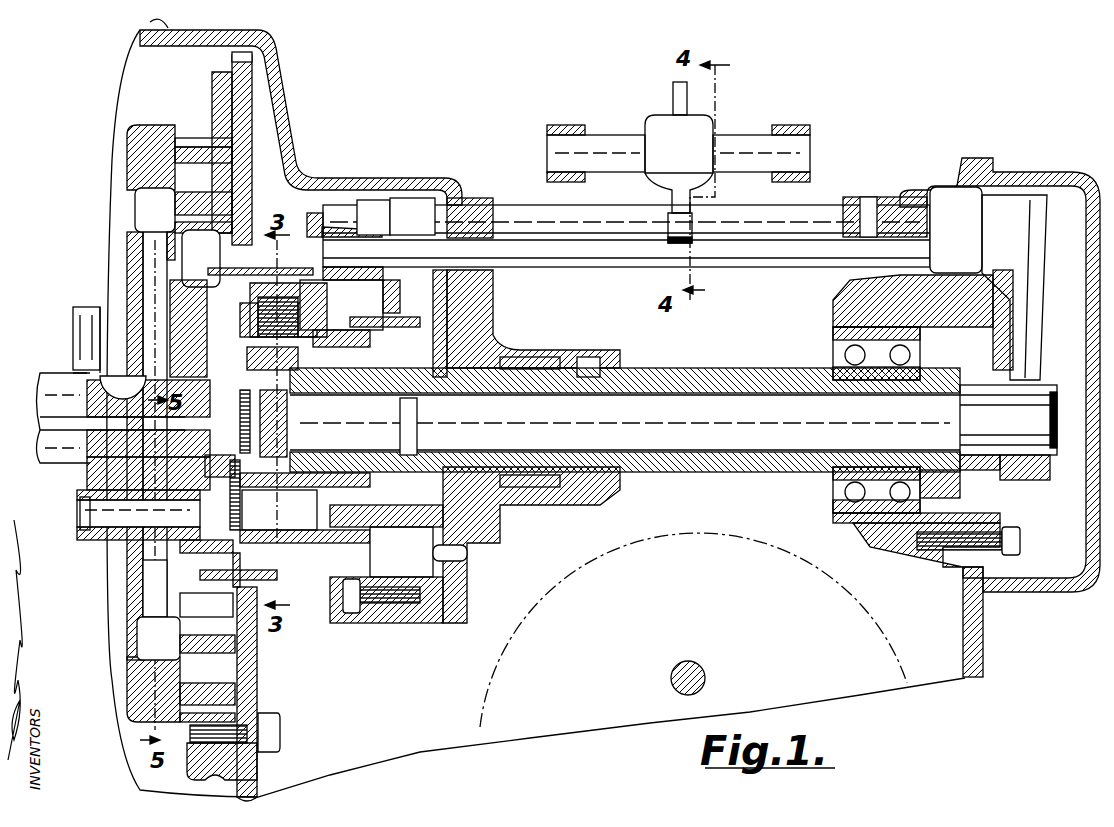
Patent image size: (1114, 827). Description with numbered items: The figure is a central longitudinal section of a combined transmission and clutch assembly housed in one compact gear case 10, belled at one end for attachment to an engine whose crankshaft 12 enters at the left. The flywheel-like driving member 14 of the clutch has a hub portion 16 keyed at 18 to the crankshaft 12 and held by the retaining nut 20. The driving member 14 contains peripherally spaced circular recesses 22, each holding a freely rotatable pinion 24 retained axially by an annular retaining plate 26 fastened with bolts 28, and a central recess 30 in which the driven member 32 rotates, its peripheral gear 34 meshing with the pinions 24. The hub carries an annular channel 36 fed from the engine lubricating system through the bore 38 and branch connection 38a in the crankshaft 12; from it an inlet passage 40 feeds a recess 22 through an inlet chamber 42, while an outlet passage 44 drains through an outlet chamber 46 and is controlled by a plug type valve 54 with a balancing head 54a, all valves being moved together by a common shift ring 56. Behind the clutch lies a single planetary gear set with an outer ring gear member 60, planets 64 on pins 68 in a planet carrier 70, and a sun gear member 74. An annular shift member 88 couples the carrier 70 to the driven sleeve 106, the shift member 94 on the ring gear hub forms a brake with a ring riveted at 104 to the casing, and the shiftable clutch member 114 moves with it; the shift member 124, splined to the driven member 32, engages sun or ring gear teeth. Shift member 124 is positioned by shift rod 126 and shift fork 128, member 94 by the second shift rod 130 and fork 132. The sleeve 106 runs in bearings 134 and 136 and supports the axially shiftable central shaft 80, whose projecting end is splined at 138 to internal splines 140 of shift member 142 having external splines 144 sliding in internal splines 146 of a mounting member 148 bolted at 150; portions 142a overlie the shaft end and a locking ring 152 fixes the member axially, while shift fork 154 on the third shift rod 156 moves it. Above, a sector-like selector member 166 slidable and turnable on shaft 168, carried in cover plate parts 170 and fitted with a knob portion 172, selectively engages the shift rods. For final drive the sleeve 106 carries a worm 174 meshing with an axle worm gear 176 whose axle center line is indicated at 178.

The gear case 10 is at (300, 148).
The crankshaft 12 is at (75, 372).
The driving member 14 is at (127, 150).
The hub portion 16 is at (75, 365).
The key 18 is at (110, 390).
The retaining nut 20 is at (200, 380).
The circular recesses 22 is at (172, 160).
The pinion 24 is at (230, 157).
The annular retaining plate 26 is at (250, 668).
The bolts 28 is at (268, 735).
The central recess 30 is at (182, 250).
The driven member 32 is at (232, 228).
The gear 34 is at (180, 217).
The annular channel 36 is at (195, 350).
The bore 38 is at (95, 432).
The branch connection 38a is at (150, 450).
The inlet passage 40 is at (150, 262).
The inlet chamber 42 is at (155, 192).
The outlet passage 44 is at (148, 597).
The outlet chamber 46 is at (145, 630).
The plug type valve 54 is at (100, 527).
The balancing head 54a is at (217, 471).
The shift ring 56 is at (92, 525).
The outer ring gear member 60 is at (330, 300).
The planets 64 is at (295, 590).
The pins 68 is at (250, 517).
The planet carrier 70 is at (253, 375).
The sun gear member 74 is at (225, 495).
The central shaft 80 is at (712, 423).
The annular shift member 88 is at (338, 462).
The shift member 94 is at (386, 564).
The rivets 104 is at (466, 553).
The sleeve 106 is at (520, 392).
The shiftable clutch member 114 is at (427, 460).
The shift member 124 is at (292, 590).
The shift rod 126 is at (583, 267).
The shift fork 128 is at (302, 213).
The second shift rod 130 is at (604, 205).
The shift fork 132 is at (395, 305).
The bearing 134 is at (548, 368).
The bearing 136 is at (845, 355).
The splines 138 is at (945, 455).
The internal splines 140 is at (1015, 472).
The shift member 142 is at (1000, 490).
The overlying portions 142a is at (1046, 466).
The external splines 144 is at (1000, 513).
The internal splines 146 is at (1000, 340).
The mounting member 148 is at (1000, 570).
The bolts 150 is at (1020, 545).
The locking ring 152 is at (1058, 402).
The shift fork 154 is at (1040, 310).
The third shift rod 156 is at (962, 235).
The selector member 166 is at (668, 196).
The shaft 168 is at (740, 130).
The cover plate parts 170 is at (568, 125).
The knob portion 172 is at (673, 97).
The worm 174 is at (700, 495).
The axle worm gear 176 is at (498, 597).
The axle center line 178 is at (706, 672).